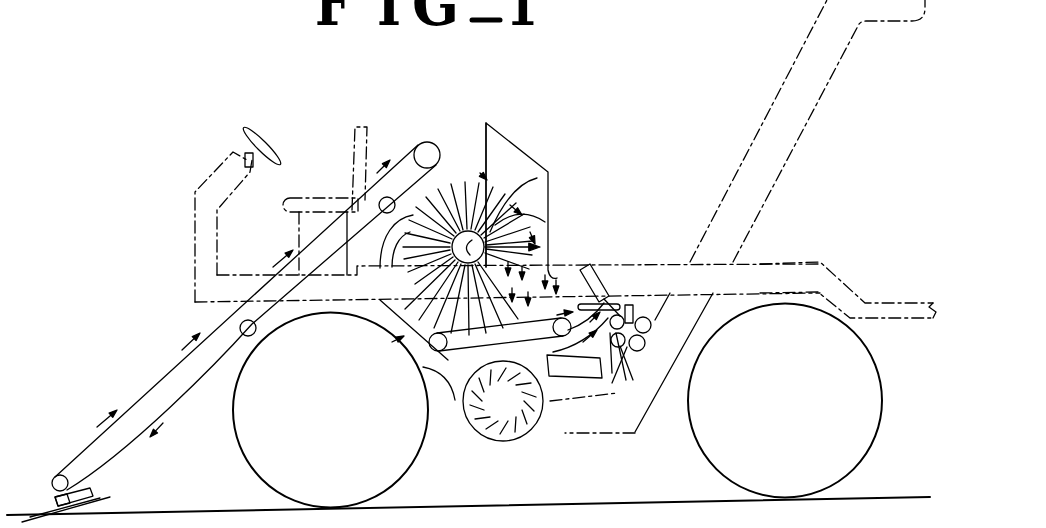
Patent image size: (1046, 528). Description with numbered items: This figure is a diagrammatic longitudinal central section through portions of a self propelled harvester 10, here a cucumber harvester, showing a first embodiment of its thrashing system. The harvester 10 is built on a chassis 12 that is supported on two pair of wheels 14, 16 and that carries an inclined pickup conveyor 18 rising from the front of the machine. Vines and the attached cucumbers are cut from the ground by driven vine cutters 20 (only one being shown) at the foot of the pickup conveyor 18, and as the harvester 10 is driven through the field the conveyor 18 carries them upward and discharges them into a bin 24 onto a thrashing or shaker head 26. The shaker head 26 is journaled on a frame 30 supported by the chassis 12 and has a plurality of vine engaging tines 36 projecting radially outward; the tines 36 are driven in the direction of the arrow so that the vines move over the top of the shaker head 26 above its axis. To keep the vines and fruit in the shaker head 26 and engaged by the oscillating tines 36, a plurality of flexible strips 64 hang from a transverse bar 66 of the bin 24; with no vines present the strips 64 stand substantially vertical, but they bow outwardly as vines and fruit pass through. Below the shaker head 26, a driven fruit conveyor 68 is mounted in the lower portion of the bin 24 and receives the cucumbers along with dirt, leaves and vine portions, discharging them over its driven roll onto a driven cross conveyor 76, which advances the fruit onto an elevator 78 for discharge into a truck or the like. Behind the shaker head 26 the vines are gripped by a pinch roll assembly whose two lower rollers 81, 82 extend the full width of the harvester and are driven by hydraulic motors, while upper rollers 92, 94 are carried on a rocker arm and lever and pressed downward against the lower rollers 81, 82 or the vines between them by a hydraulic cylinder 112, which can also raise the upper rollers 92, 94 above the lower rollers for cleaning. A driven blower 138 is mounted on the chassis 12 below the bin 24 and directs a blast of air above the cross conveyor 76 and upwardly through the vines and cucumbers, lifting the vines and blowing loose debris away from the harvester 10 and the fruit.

The self propelled harvester 10 is at (202, 78).
The chassis 12 is at (182, 283).
The wheels 14 is at (233, 407).
The wheels 16 is at (883, 393).
The inclined pickup conveyor 18 is at (154, 368).
The driven vine cutters 20 is at (110, 497).
The bin 24 is at (533, 163).
The shaker head 26 is at (548, 222).
The frame 30 is at (787, 262).
The vine engaging tines 36 is at (500, 197).
The flexible strips 64 is at (493, 147).
The transverse bar 66 is at (487, 135).
The fruit conveyor 68 is at (423, 367).
The cross conveyor 76 is at (577, 383).
The elevator 78 is at (803, 55).
The lower roller 81 is at (634, 380).
The lower roller 82 is at (662, 346).
The upper roller 92 is at (610, 296).
The upper roller 94 is at (651, 318).
The hydraulic cylinder 112 is at (606, 268).
The driven blower 138 is at (474, 422).